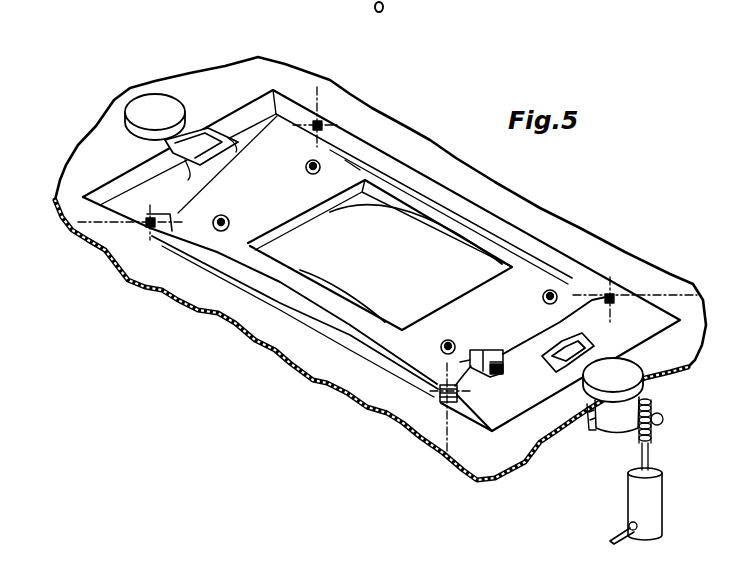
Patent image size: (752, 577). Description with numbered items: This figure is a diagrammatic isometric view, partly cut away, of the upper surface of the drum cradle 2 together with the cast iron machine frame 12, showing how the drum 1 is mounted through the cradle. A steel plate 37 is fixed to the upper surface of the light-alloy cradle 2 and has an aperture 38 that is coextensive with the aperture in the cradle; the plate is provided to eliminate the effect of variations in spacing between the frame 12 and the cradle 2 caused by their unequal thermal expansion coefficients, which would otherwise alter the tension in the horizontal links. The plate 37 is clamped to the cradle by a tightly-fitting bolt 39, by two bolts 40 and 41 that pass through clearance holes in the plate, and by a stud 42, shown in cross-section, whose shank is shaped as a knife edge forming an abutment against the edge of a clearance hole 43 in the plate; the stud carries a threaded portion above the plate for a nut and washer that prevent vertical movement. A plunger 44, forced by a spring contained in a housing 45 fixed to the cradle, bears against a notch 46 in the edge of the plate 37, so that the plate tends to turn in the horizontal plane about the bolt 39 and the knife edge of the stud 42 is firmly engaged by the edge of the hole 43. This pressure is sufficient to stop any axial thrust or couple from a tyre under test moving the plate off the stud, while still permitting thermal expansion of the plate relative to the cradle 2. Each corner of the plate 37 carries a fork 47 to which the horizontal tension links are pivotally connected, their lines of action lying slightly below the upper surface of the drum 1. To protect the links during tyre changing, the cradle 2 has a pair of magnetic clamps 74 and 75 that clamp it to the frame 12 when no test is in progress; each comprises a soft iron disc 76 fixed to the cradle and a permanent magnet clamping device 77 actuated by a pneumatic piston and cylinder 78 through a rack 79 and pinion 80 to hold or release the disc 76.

The drum 1 is at (418, 246).
The cradle 2 is at (278, 115).
The frame 12 is at (110, 150).
The steel plate 37 is at (375, 168).
The aperture 38 is at (405, 180).
The bolt 39 is at (347, 172).
The bolt 40 is at (215, 228).
The bolt 41 is at (552, 290).
The stud 42 is at (441, 348).
The clearance hole 43 is at (452, 341).
The plunger 44 is at (485, 355).
The housing 45 is at (513, 372).
The notch 46 is at (466, 357).
The fork 47 is at (147, 229).
The magnetic clamp 74 is at (648, 383).
The magnetic clamp 75 is at (140, 96).
The soft iron disc 76 is at (154, 102).
The permanent magnet clamping device 77 is at (610, 420).
The pneumatic piston and cylinder 78 is at (628, 497).
The rack 79 is at (655, 428).
The pinion 80 is at (663, 416).